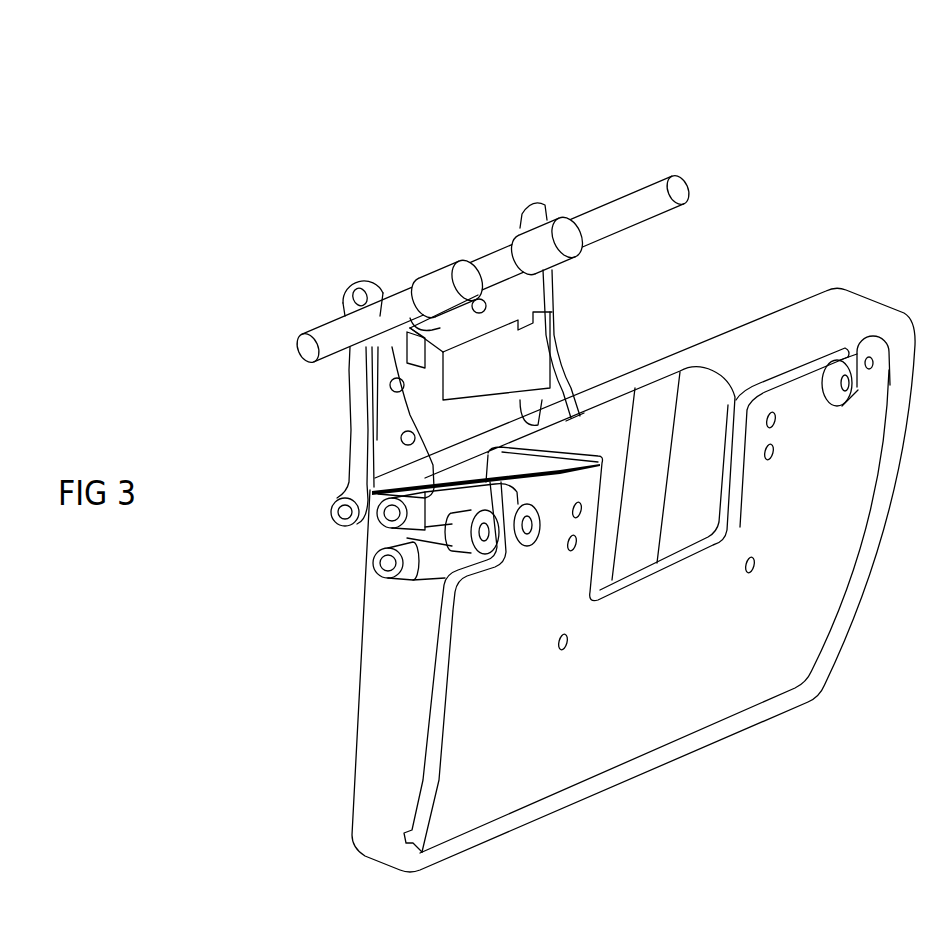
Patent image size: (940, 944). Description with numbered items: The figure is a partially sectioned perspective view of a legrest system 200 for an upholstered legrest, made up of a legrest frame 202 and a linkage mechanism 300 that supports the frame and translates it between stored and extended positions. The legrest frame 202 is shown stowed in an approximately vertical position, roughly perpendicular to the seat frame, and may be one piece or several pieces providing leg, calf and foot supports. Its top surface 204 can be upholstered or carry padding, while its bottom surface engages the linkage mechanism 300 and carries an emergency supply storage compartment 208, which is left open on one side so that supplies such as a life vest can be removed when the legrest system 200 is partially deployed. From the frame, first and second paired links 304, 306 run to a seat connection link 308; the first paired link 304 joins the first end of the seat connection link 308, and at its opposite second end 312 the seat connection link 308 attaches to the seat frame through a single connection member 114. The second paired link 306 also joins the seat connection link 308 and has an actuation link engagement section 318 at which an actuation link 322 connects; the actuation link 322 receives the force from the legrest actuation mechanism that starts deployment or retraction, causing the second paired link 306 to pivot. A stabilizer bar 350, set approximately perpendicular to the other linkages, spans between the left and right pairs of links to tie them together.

The legrest system 200 is at (820, 95).
The legrest frame 202 is at (400, 728).
The top surface 204 is at (650, 757).
The emergency supply storage compartment 208 is at (665, 420).
The linkage mechanism 300 is at (266, 205).
The connection member 114 is at (625, 203).
The second end 312 is at (432, 250).
The stabilizer bar 350 is at (527, 352).
The seat connection link 308 is at (565, 390).
The actuation link 322 is at (360, 390).
The actuation link engagement section 318 is at (330, 515).
The second paired link 306 is at (447, 503).
The first paired link 304 is at (445, 575).